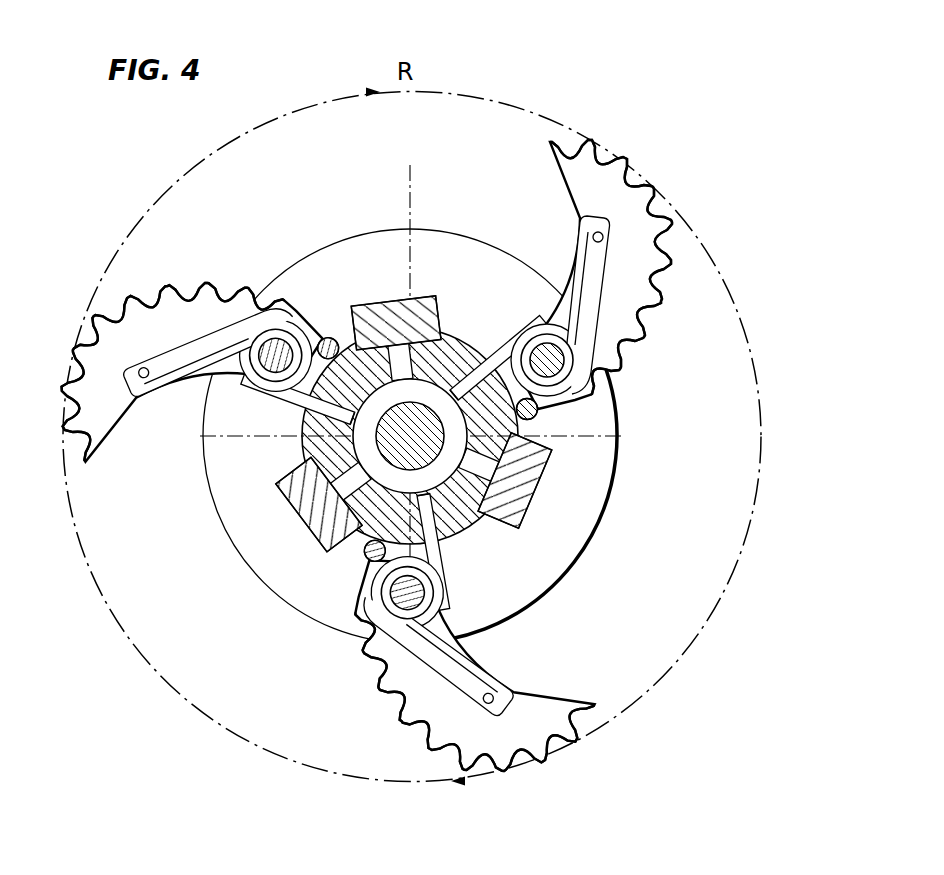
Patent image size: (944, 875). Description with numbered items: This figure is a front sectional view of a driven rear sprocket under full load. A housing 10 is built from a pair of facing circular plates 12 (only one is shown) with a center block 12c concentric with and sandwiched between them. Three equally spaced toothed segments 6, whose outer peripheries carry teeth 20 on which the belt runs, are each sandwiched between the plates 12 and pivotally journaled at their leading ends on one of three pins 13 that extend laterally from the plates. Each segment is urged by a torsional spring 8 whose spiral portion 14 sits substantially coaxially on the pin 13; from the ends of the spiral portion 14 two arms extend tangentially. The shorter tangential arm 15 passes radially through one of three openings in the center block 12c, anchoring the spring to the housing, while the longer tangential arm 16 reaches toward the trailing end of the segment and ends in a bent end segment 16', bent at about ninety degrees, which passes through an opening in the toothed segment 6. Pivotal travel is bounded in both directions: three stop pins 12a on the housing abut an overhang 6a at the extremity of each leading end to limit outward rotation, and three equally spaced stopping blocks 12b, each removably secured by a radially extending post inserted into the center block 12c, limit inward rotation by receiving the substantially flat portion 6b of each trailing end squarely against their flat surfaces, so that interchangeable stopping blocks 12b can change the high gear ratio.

The toothed segment 6 is at (562, 173).
The overhang 6a is at (332, 340).
The flat portion 6b is at (562, 188).
The torsional spring 8 is at (527, 322).
The housing 10 is at (573, 537).
The plate 12 is at (410, 436).
The stop pin 12a is at (345, 330).
The stopping block 12b is at (432, 315).
The center block 12c is at (363, 527).
The pin 13 is at (300, 328).
The spiral portion 14 is at (572, 383).
The shorter tangential arm 15 is at (502, 360).
The longer tangential arm 16 is at (416, 467).
The bent end segment 16' is at (370, 468).
The teeth 20 is at (636, 358).